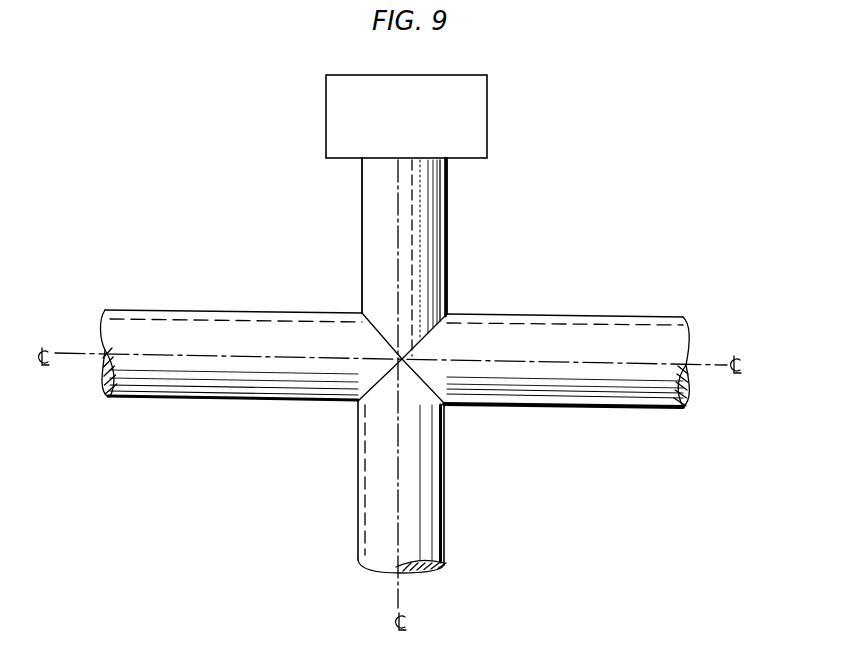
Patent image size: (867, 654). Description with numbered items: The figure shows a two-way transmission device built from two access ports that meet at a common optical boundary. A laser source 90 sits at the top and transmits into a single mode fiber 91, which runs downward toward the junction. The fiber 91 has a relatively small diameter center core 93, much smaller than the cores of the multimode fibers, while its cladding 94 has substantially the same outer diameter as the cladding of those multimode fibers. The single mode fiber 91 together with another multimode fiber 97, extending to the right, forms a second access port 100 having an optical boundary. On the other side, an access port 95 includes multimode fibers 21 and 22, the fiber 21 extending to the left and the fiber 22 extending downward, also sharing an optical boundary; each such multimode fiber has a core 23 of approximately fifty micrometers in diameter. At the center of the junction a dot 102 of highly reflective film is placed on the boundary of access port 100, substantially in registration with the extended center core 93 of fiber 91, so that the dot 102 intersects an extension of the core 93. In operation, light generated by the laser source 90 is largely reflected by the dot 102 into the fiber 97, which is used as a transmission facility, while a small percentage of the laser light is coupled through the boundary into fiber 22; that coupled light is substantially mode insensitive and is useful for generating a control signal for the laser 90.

The laser source 90 is at (488, 142).
The single mode fiber 91 is at (447, 256).
The center core 93 is at (397, 189).
The cladding 94 is at (362, 245).
The multimode fiber 97 is at (624, 316).
The second access port 100 is at (555, 268).
The core 23 is at (227, 337).
The multimode fiber 21 is at (178, 387).
The dot of highly reflective film 102 is at (408, 362).
The multimode fiber 22 is at (357, 534).
The access port 95 is at (322, 446).